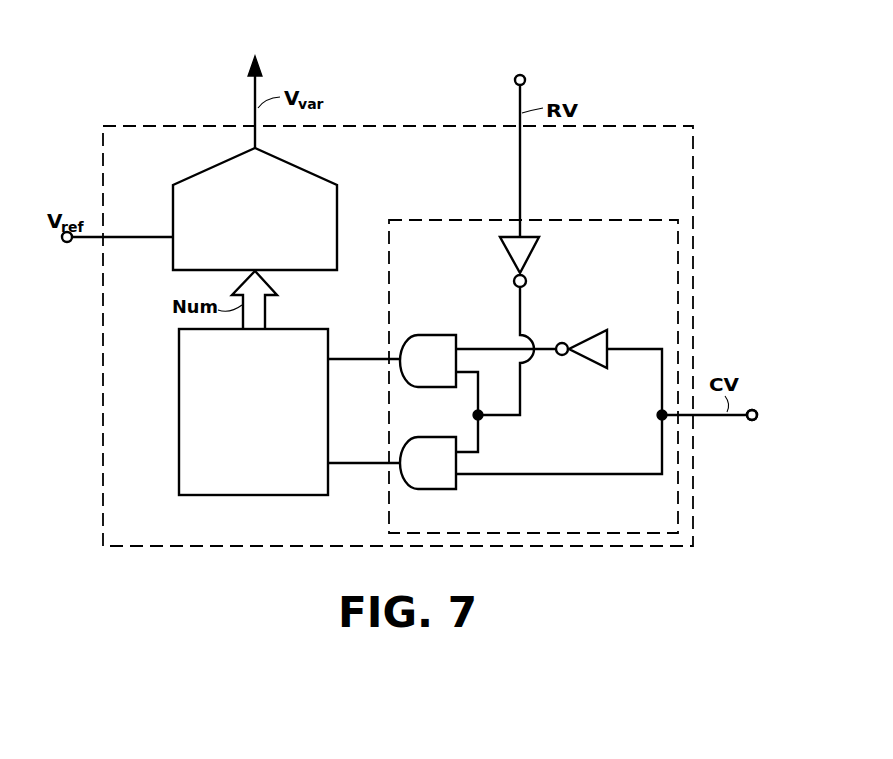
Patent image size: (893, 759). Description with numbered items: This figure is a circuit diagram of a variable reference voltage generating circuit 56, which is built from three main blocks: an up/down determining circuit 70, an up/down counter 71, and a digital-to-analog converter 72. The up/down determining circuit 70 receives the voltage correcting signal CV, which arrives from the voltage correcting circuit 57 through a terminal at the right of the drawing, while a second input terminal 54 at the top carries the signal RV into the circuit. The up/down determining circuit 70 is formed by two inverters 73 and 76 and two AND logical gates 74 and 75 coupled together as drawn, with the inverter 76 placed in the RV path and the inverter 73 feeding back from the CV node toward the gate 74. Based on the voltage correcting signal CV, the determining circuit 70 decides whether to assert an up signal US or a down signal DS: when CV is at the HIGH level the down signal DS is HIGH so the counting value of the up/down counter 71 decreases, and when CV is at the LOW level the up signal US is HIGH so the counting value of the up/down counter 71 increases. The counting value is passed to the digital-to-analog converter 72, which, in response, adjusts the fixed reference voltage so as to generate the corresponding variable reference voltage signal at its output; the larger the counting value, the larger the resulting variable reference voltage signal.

The reference voltage (RV) input terminal 54 is at (525, 77).
The variable reference voltage generating circuit 56 is at (694, 170).
The voltage correcting circuit 57 is at (757, 417).
The up/down determining circuit 70 is at (626, 220).
The up/down counter 71 is at (178, 418).
The digital-to-analog converter 72 is at (338, 212).
The inverter 73 is at (588, 337).
The AND logical gate 74 is at (441, 335).
The AND logical gate 75 is at (437, 489).
The inverter 76 is at (506, 257).